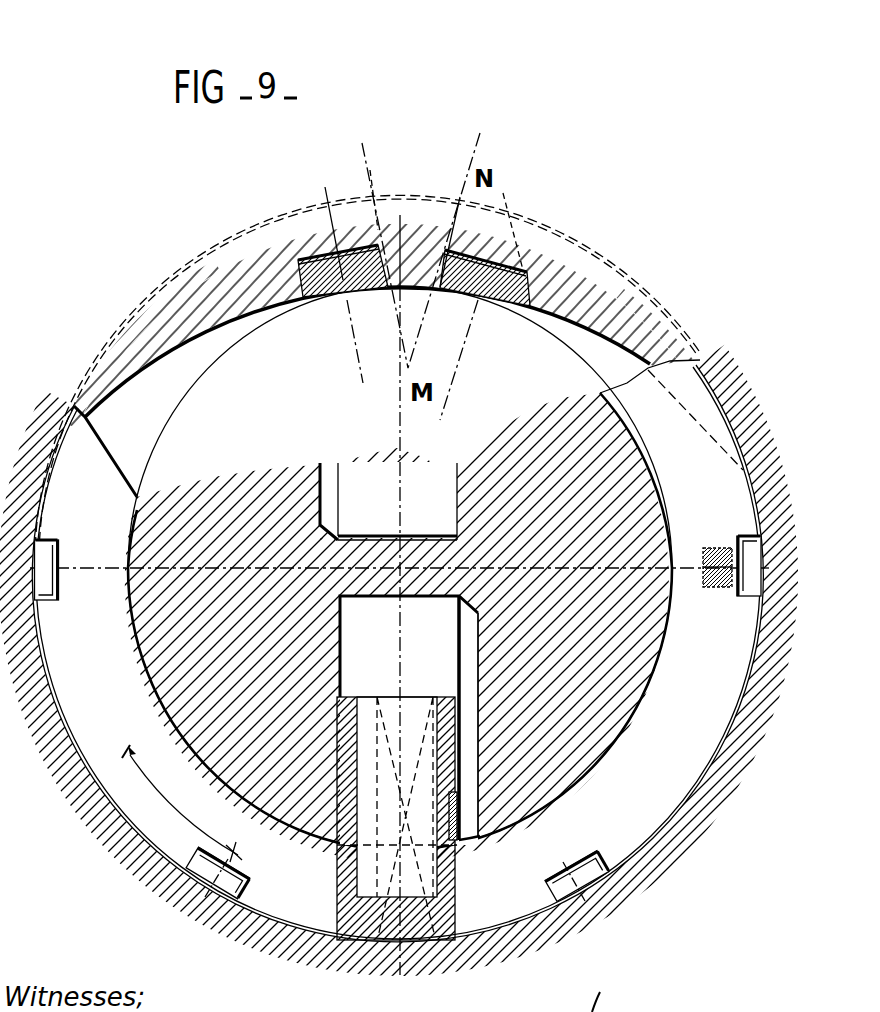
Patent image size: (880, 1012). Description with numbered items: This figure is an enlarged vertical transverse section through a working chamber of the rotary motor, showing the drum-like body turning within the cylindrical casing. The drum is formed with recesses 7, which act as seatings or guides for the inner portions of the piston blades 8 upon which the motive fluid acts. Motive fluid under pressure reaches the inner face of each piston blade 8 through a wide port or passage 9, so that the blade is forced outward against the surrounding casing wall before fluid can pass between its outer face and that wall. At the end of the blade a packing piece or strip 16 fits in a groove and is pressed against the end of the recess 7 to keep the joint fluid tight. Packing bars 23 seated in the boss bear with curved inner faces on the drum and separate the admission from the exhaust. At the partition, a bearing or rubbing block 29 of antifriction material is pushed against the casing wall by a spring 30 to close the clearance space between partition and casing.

The recess 7 is at (442, 473).
The piston blade 8 is at (350, 913).
The port or passage 9 is at (465, 737).
The packing piece or strip 16 is at (457, 937).
The packing bar 23 is at (533, 258).
The bearing or rubbing block 29 is at (737, 593).
The spring 30 is at (720, 547).